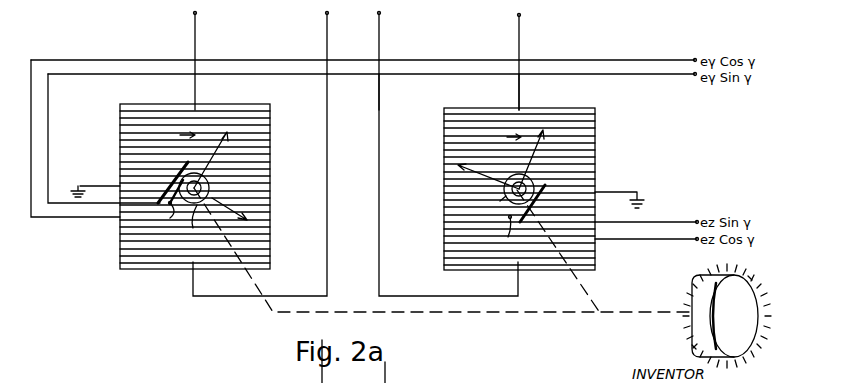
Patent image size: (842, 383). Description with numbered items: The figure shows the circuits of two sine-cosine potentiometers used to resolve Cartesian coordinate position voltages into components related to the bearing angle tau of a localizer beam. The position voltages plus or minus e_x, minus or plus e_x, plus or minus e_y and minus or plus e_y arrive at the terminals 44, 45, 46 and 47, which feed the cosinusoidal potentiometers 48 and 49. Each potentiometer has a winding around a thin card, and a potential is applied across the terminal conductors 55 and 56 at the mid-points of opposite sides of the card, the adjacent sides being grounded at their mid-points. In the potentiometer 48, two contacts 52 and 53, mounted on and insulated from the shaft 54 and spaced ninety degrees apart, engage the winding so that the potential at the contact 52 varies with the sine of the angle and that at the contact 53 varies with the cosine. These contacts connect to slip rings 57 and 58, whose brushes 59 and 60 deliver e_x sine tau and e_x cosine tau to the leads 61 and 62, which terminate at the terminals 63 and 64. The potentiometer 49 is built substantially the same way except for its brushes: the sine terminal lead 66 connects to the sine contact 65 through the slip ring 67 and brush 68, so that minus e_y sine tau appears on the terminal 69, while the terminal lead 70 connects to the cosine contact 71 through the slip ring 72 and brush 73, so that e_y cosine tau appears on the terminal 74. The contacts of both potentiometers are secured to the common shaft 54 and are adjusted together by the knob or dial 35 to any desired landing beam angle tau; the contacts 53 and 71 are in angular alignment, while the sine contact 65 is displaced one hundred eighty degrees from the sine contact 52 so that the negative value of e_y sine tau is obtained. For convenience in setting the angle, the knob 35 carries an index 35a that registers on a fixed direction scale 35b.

The knob 35 is at (692, 297).
The index 35a is at (762, 262).
The fixed direction scale 35b is at (692, 347).
The terminal 44 is at (521, 17).
The terminal 45 is at (381, 14).
The terminal 46 is at (197, 14).
The terminal 47 is at (329, 14).
The cosinusoidal potentiometer 48 is at (596, 133).
The cosinusoidal potentiometer 49 is at (120, 115).
The contact 52 is at (475, 165).
The contact 53 is at (538, 158).
The shaft 54 is at (613, 318).
The terminal conductor 55 is at (519, 103).
The terminal conductor 56 is at (379, 105).
The slip ring 57 is at (510, 178).
The slip ring 58 is at (506, 196).
The brush 59 is at (538, 200).
The brush 60 is at (510, 218).
The lead 61 is at (645, 221).
The lead 62 is at (625, 239).
The terminal 63 is at (695, 221).
The terminal 64 is at (695, 240).
The sine contact 65 is at (228, 203).
The sine terminal lead 66 is at (48, 157).
The slip ring 67 is at (196, 228).
The brush 68 is at (180, 168).
The terminal 69 is at (695, 76).
The terminal lead 70 is at (60, 218).
The cosine contact 71 is at (217, 147).
The slip ring 72 is at (210, 185).
The brush 73 is at (172, 222).
The terminal 74 is at (695, 60).